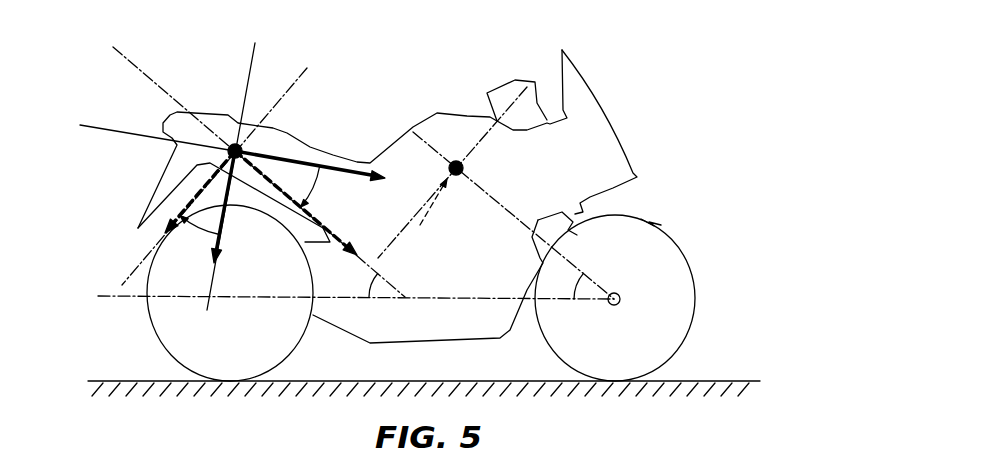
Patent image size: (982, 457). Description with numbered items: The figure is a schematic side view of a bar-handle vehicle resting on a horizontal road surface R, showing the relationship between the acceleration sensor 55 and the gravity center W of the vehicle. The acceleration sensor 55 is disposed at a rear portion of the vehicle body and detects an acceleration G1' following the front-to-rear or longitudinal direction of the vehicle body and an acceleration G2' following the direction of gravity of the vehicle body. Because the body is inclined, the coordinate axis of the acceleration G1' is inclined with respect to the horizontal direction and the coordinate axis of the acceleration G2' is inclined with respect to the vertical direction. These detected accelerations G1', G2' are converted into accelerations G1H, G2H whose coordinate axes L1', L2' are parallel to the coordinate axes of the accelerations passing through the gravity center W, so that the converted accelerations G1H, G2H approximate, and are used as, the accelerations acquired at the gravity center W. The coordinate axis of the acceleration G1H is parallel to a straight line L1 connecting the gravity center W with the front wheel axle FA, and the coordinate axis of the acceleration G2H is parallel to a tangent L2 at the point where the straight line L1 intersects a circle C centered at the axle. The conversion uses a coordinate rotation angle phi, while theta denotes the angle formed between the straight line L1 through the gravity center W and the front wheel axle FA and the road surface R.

The acceleration sensor 55 is at (232, 147).
The gravity center W is at (463, 166).
The front wheel axle FA is at (613, 306).
The road surface R is at (697, 380).
The straight line L1 is at (519, 215).
The tangent L2 is at (452, 158).
The coordinate axis L1' is at (283, 172).
The coordinate axis L2' is at (193, 176).
The circle C is at (432, 205).
The acceleration G1' is at (310, 155).
The acceleration G2' is at (232, 209).
The converted acceleration G1H is at (352, 241).
The converted acceleration G2H is at (165, 195).